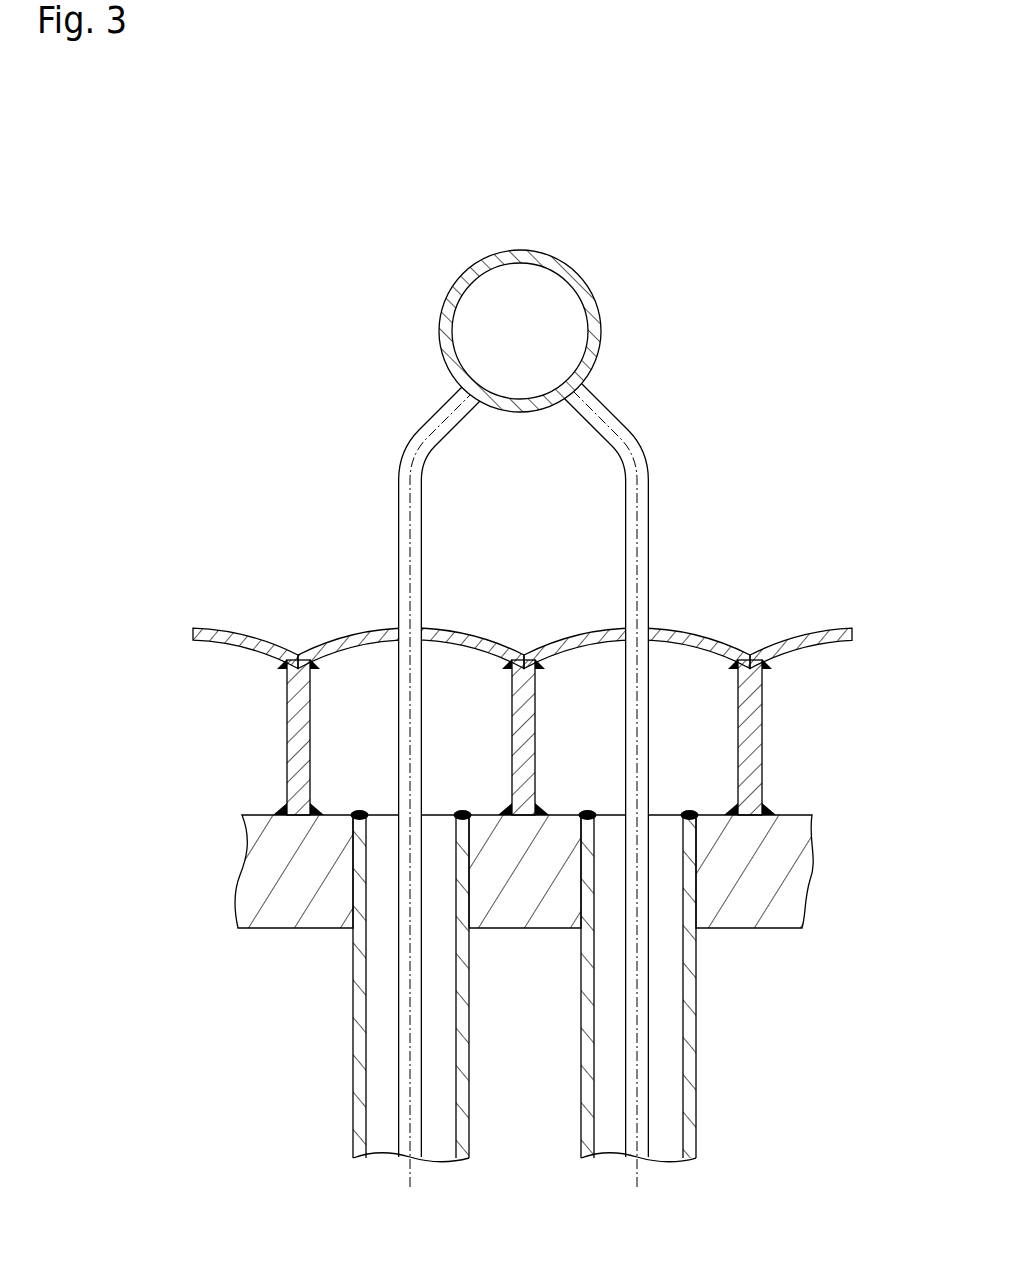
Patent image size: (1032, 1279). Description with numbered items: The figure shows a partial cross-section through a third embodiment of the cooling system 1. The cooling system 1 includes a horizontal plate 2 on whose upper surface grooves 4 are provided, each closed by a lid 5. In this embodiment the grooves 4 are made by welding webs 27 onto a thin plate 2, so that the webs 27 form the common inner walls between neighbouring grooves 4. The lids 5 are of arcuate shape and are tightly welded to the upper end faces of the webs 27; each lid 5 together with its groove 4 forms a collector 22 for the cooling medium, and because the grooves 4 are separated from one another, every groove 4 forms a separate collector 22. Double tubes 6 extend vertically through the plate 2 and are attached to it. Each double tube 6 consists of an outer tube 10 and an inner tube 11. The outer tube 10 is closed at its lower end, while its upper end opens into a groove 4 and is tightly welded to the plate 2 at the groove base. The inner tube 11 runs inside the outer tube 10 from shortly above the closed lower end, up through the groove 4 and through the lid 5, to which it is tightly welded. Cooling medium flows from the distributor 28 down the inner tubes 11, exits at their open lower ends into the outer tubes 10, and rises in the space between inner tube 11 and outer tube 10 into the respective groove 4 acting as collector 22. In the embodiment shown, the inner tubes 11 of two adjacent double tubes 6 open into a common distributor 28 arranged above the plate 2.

The cooling system 1 is at (338, 208).
The plate 2 is at (256, 878).
The groove 4 is at (522, 614).
The lid 5 is at (522, 614).
The double tube 6 is at (479, 984).
The outer tube 10 is at (355, 1113).
The inner tube 11 is at (420, 412).
The collector 22 is at (360, 703).
The web 27 is at (285, 731).
The distributor 28 is at (588, 283).